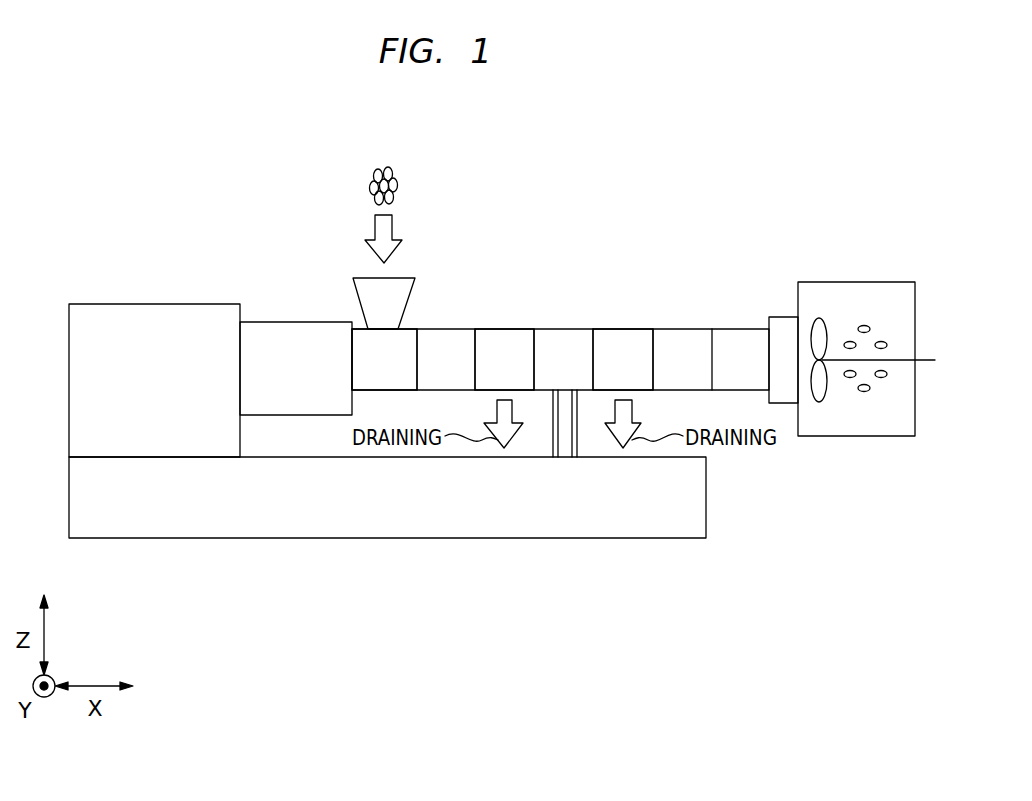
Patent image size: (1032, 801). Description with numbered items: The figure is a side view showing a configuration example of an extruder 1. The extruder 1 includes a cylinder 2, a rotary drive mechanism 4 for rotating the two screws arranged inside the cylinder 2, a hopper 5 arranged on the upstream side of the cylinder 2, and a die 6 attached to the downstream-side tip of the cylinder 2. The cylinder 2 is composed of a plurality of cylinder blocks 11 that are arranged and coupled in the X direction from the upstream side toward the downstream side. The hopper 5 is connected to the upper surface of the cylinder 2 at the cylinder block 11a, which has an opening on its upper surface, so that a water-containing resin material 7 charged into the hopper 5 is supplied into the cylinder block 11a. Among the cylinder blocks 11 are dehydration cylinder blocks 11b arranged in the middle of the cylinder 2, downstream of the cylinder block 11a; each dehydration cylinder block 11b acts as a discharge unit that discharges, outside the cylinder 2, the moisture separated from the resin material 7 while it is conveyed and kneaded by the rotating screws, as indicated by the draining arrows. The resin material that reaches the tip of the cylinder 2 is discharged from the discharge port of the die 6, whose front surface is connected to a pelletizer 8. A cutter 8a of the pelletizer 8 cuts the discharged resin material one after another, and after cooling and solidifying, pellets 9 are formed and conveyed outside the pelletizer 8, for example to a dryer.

The extruder 1 is at (784, 213).
The cylinder 2 is at (544, 328).
The rotary drive mechanism 4 is at (277, 335).
The hopper 5 is at (353, 281).
The die 6 is at (785, 330).
The resin material 7 is at (392, 169).
The pelletizer 8 is at (906, 281).
The cutter 8a is at (819, 403).
The pellets 9 is at (865, 324).
The cylinder blocks 11 is at (447, 347).
The cylinder block 11a is at (372, 370).
The dehydration cylinder block 11b is at (497, 347).